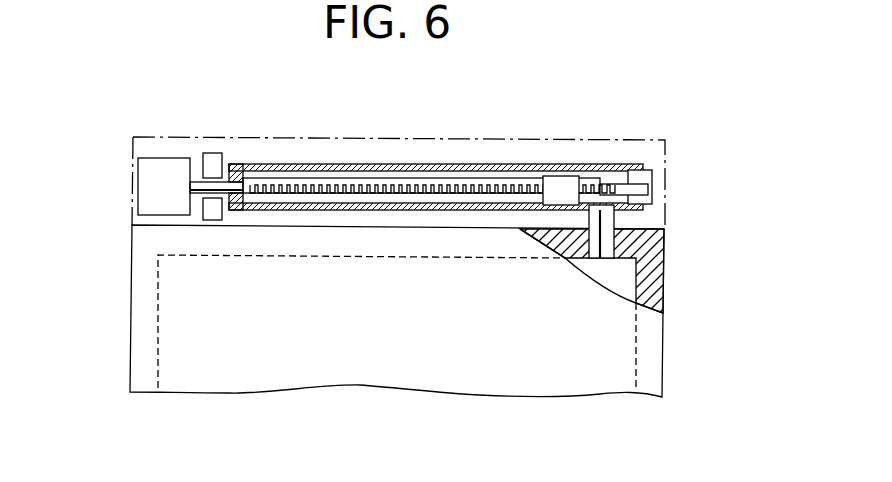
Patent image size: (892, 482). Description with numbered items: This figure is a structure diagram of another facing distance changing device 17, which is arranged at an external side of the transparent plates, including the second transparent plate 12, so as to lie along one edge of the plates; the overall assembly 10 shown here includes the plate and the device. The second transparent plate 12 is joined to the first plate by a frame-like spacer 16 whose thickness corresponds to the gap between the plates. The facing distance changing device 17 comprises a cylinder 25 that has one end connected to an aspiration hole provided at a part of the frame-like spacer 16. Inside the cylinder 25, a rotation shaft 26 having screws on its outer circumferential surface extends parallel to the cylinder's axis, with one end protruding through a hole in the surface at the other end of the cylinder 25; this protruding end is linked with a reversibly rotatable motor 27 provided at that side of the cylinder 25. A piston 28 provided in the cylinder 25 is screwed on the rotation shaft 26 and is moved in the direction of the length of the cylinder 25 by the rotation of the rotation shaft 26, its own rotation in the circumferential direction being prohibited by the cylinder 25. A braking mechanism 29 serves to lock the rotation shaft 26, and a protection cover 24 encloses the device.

The apparatus 10 is at (122, 378).
The second transparent plate 12 is at (178, 317).
The frame-like spacer 16 is at (665, 252).
The facing distance changing device 17 is at (638, 133).
The protection cover 24 is at (362, 158).
The cylinder 25 is at (462, 164).
The rotation shaft 26 is at (318, 185).
The reversibly rotatable motor 27 is at (150, 188).
The piston 28 is at (556, 182).
The braking mechanism 29 is at (213, 148).